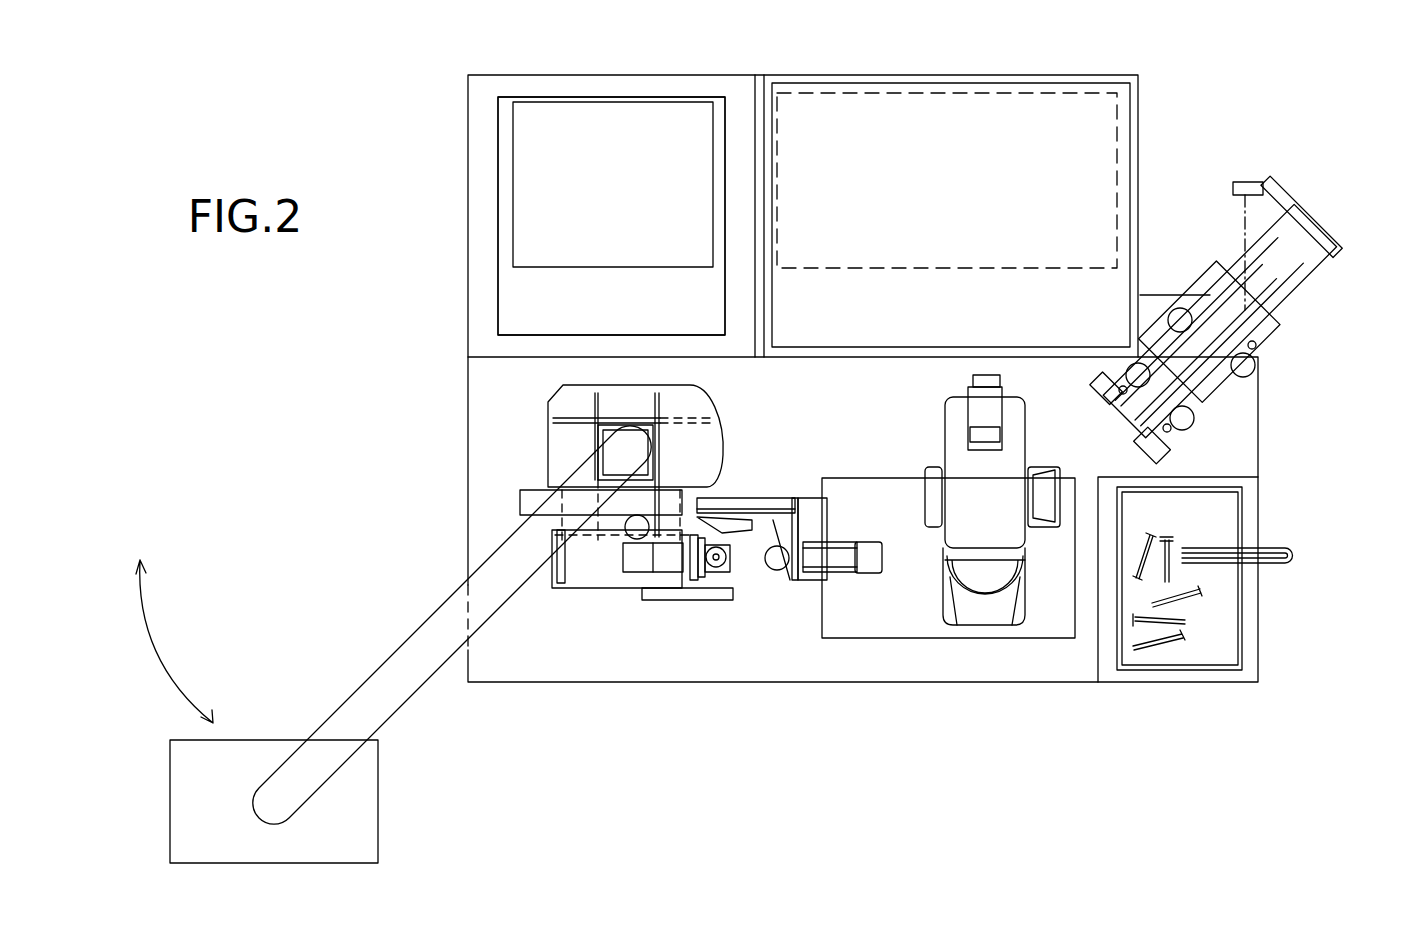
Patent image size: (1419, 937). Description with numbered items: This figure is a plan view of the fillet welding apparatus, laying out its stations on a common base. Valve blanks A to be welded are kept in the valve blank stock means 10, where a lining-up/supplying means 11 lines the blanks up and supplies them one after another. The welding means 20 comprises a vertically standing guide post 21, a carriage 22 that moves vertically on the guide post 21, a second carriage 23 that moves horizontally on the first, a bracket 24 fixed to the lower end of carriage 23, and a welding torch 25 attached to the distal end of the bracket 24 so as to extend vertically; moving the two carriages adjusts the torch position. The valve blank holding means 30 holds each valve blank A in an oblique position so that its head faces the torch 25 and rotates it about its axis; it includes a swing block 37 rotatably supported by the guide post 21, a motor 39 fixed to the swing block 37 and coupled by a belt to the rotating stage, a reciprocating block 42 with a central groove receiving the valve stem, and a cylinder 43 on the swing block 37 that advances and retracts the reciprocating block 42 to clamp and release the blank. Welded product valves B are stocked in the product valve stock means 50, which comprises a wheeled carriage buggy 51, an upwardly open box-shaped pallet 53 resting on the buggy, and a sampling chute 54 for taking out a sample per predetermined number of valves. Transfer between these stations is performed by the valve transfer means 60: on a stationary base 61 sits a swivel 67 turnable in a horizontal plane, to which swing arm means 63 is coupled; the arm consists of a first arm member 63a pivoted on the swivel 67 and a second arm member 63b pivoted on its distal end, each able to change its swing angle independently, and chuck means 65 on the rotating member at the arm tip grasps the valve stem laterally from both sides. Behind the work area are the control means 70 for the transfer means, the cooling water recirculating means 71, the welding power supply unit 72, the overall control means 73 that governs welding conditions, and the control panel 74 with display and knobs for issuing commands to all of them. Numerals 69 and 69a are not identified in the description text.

The valve blank stock means 10 is at (1192, 353).
The lining-up/supplying means 11 is at (1209, 331).
The welding means 20 is at (592, 564).
The guide post 21 is at (593, 435).
The carriage 22 is at (530, 507).
The carriage 23 is at (612, 537).
The bracket 24 is at (662, 557).
The welding torch 25 is at (730, 572).
The valve blank holding means 30 is at (801, 580).
The swing block 37 is at (760, 503).
The motor 39 is at (777, 570).
The reciprocating block 42 is at (830, 560).
The cylinder 43 is at (868, 557).
The product valve stock means 50 is at (1242, 609).
The carriage buggy 51 is at (1208, 677).
The box-shaped pallet 53 is at (1252, 620).
The sampling chute 54 is at (1280, 540).
The valve transfer means 60 is at (961, 520).
The stationary base 61 is at (925, 620).
The swing arm means 63 is at (925, 520).
The first arm member 63a is at (963, 465).
The second arm member 63b is at (980, 395).
The chuck means 65 is at (1100, 437).
The swivel 67 is at (990, 600).
The tool end blocks 69 is at (1097, 395).
The tool tip 69a is at (1115, 372).
The control means for the valve transfer means 70 is at (672, 110).
The cooling water recirculating means 71 is at (1108, 112).
The welding power supply unit 72 is at (500, 325).
The overall control means 73 is at (1118, 270).
The control panel 74 is at (370, 790).
The valve blank A is at (1118, 440).
The product valve B is at (1153, 645).